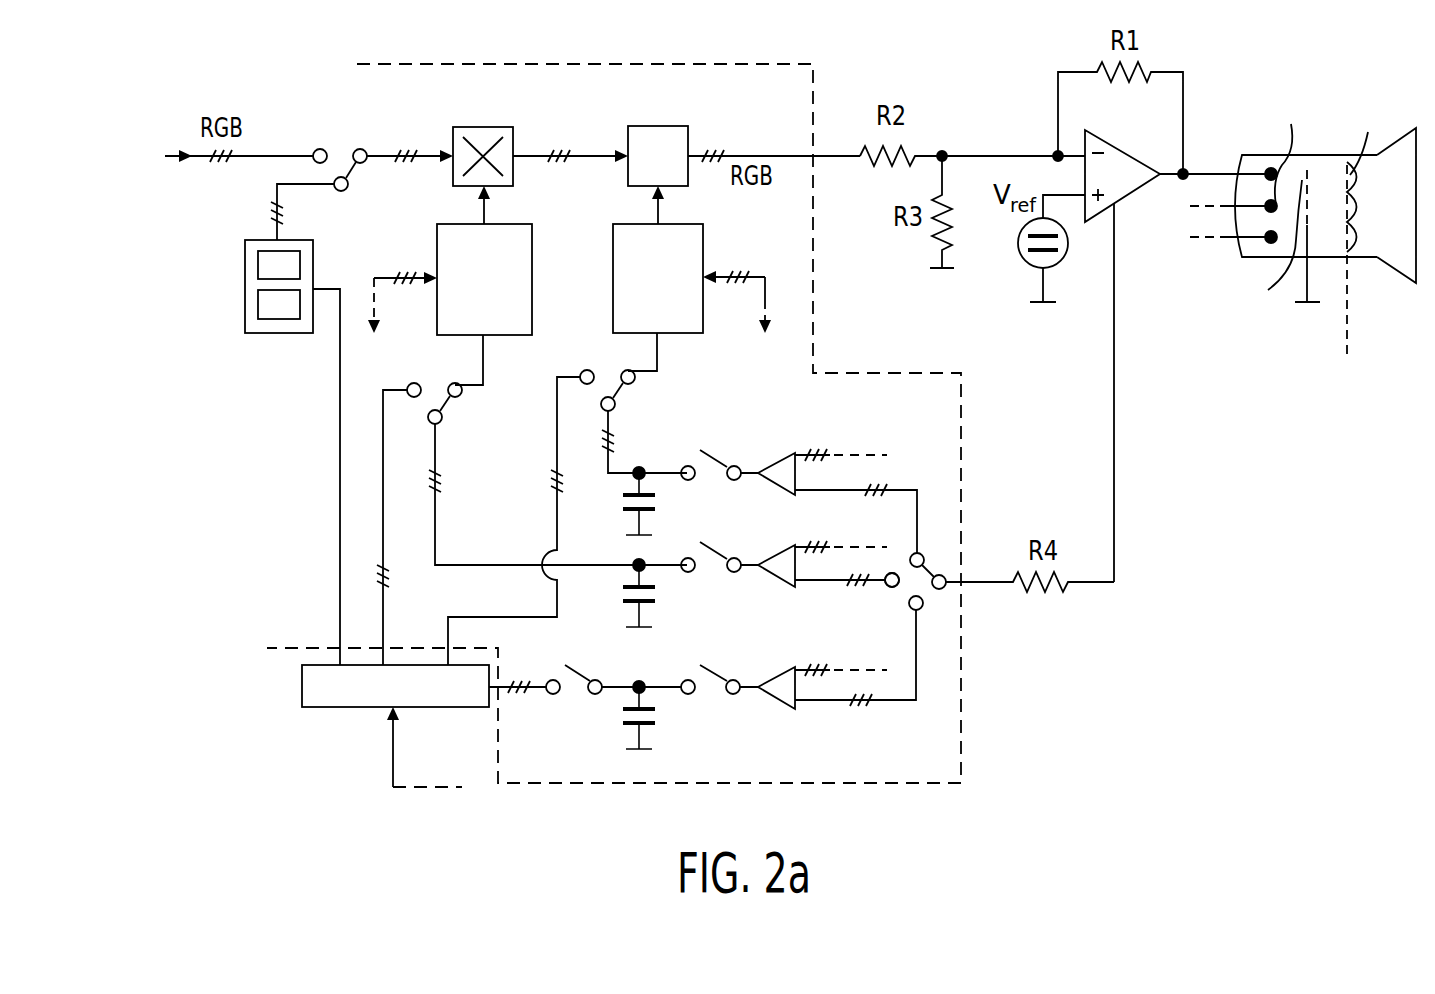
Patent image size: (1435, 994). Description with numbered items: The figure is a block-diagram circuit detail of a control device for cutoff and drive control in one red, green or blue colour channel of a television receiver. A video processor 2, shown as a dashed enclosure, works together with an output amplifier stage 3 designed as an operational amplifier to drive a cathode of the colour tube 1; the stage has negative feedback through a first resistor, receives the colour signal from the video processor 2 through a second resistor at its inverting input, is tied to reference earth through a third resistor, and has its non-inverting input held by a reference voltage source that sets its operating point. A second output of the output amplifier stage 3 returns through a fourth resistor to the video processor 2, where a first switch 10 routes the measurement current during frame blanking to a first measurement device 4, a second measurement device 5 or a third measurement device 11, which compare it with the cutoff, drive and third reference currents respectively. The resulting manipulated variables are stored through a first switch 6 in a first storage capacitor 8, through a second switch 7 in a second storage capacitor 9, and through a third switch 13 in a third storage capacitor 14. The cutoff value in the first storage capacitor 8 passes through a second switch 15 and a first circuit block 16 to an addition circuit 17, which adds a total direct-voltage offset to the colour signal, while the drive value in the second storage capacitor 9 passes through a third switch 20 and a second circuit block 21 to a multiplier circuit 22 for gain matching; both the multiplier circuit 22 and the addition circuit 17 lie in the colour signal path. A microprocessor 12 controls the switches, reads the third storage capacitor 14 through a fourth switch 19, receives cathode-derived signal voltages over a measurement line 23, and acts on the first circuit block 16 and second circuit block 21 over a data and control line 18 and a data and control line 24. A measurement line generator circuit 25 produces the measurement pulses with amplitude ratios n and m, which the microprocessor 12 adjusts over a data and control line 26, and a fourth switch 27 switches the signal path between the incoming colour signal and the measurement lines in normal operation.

The colour tube 1 is at (1255, 146).
The video processor 2 is at (672, 46).
The output amplifier stage 3 is at (1130, 197).
The first measurement device 4 is at (768, 482).
The second measurement device 5 is at (768, 574).
The first switch 6 is at (715, 450).
The second switch 7 is at (715, 542).
The first storage capacitor 8 is at (622, 498).
The second storage capacitor 9 is at (622, 595).
The first switch 10 is at (940, 573).
The third measurement device 11 is at (768, 695).
The microprocessor 12 is at (433, 710).
The third switch 13 is at (716, 663).
The third storage capacitor 14 is at (660, 723).
The second switch 15 is at (616, 404).
The first circuit block 16 is at (703, 240).
The addition circuit 17 is at (688, 136).
The data and control line 18 is at (762, 304).
The fourth switch 19 is at (577, 663).
The third switch 20 is at (443, 420).
The second circuit block 21 is at (514, 340).
The multiplier circuit 22 is at (483, 127).
The measurement line 23 is at (393, 768).
The data and control line 24 is at (373, 292).
The measurement line generator circuit 25 is at (262, 336).
The data and control line 26 is at (340, 583).
The fourth switch 27 is at (347, 150).